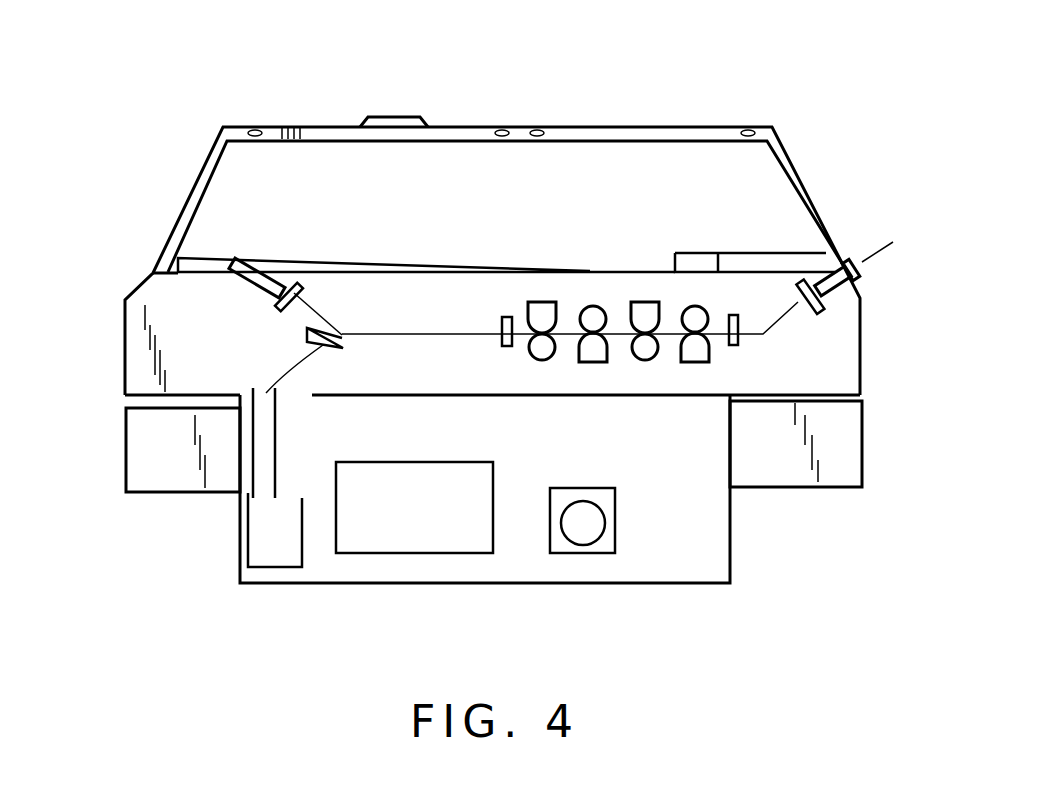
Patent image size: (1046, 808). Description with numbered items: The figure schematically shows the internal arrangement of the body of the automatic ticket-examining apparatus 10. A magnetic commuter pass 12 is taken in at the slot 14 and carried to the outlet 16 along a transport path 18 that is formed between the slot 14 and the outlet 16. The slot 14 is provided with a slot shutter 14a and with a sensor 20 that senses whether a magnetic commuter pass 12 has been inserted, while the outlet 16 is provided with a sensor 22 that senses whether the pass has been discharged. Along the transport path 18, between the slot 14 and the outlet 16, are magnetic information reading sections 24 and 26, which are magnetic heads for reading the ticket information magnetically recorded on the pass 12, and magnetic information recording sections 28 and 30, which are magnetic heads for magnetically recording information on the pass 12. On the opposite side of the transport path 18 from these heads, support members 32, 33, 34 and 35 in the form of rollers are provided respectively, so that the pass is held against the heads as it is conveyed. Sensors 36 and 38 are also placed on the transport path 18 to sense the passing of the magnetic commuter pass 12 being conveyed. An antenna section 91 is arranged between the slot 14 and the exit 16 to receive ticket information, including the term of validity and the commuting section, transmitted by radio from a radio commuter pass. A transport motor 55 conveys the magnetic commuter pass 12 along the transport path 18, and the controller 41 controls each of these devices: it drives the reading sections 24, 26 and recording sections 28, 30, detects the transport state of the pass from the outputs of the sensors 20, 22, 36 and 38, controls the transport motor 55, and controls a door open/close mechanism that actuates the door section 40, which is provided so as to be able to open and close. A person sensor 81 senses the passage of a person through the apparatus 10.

The automatic ticket-examining apparatus 10 is at (142, 368).
The magnetic commuter pass 12 is at (876, 251).
The slot 14 is at (852, 270).
The slot shutter 14a is at (852, 286).
The outlet 16 is at (268, 258).
The transport path 18 is at (467, 333).
The sensor 20 is at (823, 306).
The sensor 22 is at (296, 283).
The magnetic information reading section 24 is at (695, 362).
The magnetic information reading section 26 is at (645, 302).
The magnetic information recording section 28 is at (596, 362).
The magnetic information recording section 30 is at (542, 302).
The support member 32 is at (697, 305).
The support member 33 is at (645, 360).
The support member 34 is at (593, 305).
The support member 35 is at (541, 360).
The sensor 36 is at (738, 340).
The sensor 38 is at (505, 347).
The door section 40 is at (185, 485).
The controller 41 is at (433, 540).
The transport motor 55 is at (610, 543).
The person sensor 81 is at (256, 128).
The antenna section 91 is at (758, 262).